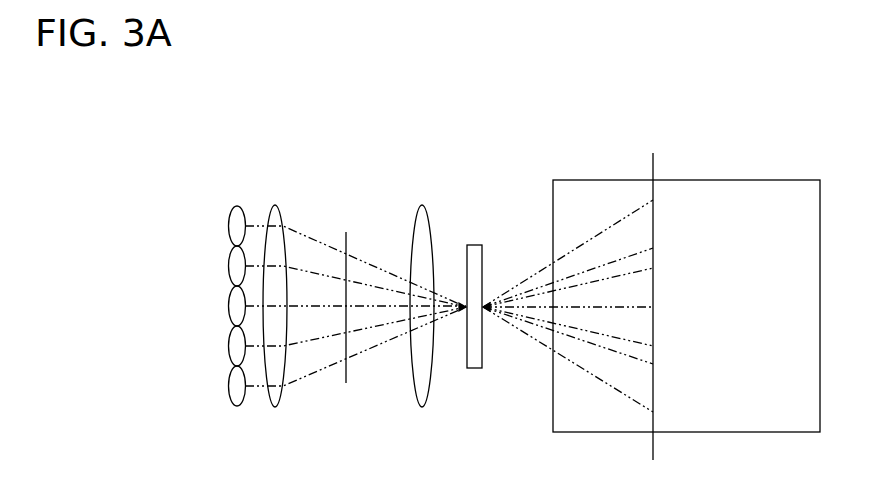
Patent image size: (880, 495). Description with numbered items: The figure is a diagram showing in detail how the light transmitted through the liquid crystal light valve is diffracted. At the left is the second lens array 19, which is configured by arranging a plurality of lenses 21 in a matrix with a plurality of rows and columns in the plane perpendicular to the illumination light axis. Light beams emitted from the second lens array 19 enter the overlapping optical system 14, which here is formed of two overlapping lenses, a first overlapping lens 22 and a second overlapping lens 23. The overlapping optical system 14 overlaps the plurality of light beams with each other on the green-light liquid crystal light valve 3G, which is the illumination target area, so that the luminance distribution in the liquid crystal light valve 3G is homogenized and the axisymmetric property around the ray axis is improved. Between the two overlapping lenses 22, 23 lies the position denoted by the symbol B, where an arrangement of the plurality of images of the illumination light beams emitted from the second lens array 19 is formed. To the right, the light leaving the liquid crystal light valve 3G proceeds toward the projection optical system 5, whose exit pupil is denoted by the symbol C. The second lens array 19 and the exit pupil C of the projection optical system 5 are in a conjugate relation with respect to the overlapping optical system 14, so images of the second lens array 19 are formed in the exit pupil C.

The second lens array 19 is at (237, 200).
The lenses 21 is at (233, 407).
The overlapping optical system 14 is at (348, 245).
The first overlapping lens 22 is at (273, 207).
The second overlapping lens 23 is at (405, 266).
The position B is at (344, 236).
The green-light liquid crystal light valve 3G is at (472, 245).
The projection optical system 5 is at (725, 180).
The exit pupil C is at (652, 168).